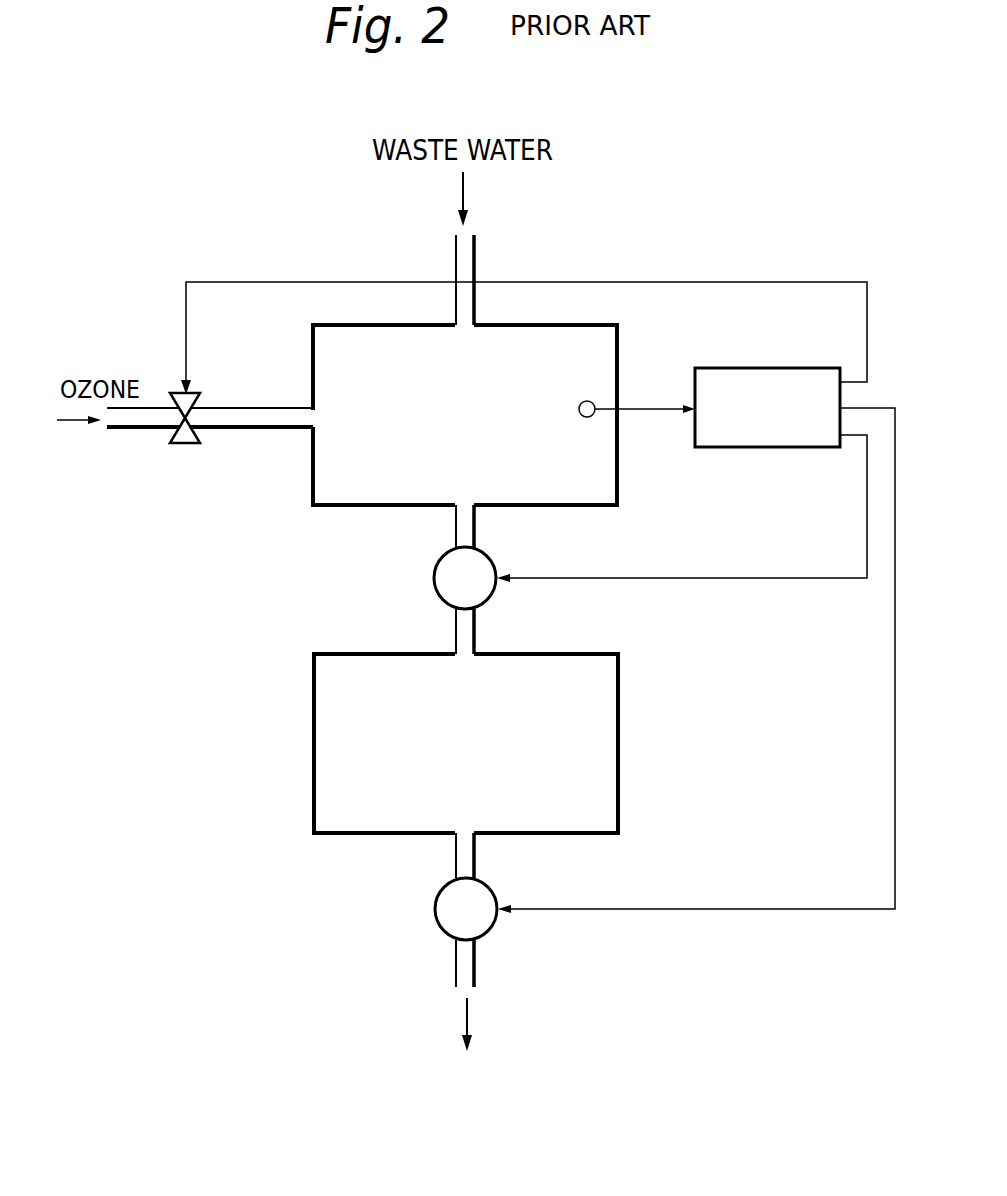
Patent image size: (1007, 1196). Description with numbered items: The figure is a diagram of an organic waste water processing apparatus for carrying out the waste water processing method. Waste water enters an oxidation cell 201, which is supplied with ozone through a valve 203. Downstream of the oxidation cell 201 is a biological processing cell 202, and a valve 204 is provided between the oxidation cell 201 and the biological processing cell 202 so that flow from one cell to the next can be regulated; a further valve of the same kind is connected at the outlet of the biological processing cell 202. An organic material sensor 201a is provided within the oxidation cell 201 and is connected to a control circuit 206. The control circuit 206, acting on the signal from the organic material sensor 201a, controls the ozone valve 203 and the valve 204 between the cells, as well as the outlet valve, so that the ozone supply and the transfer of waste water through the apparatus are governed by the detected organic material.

The oxidation cell 201 is at (617, 338).
The organic material sensor 201a is at (587, 401).
The biological processing cell 202 is at (618, 712).
The valve 203 is at (196, 405).
The valve 204 is at (494, 563).
The control circuit 206 is at (778, 368).